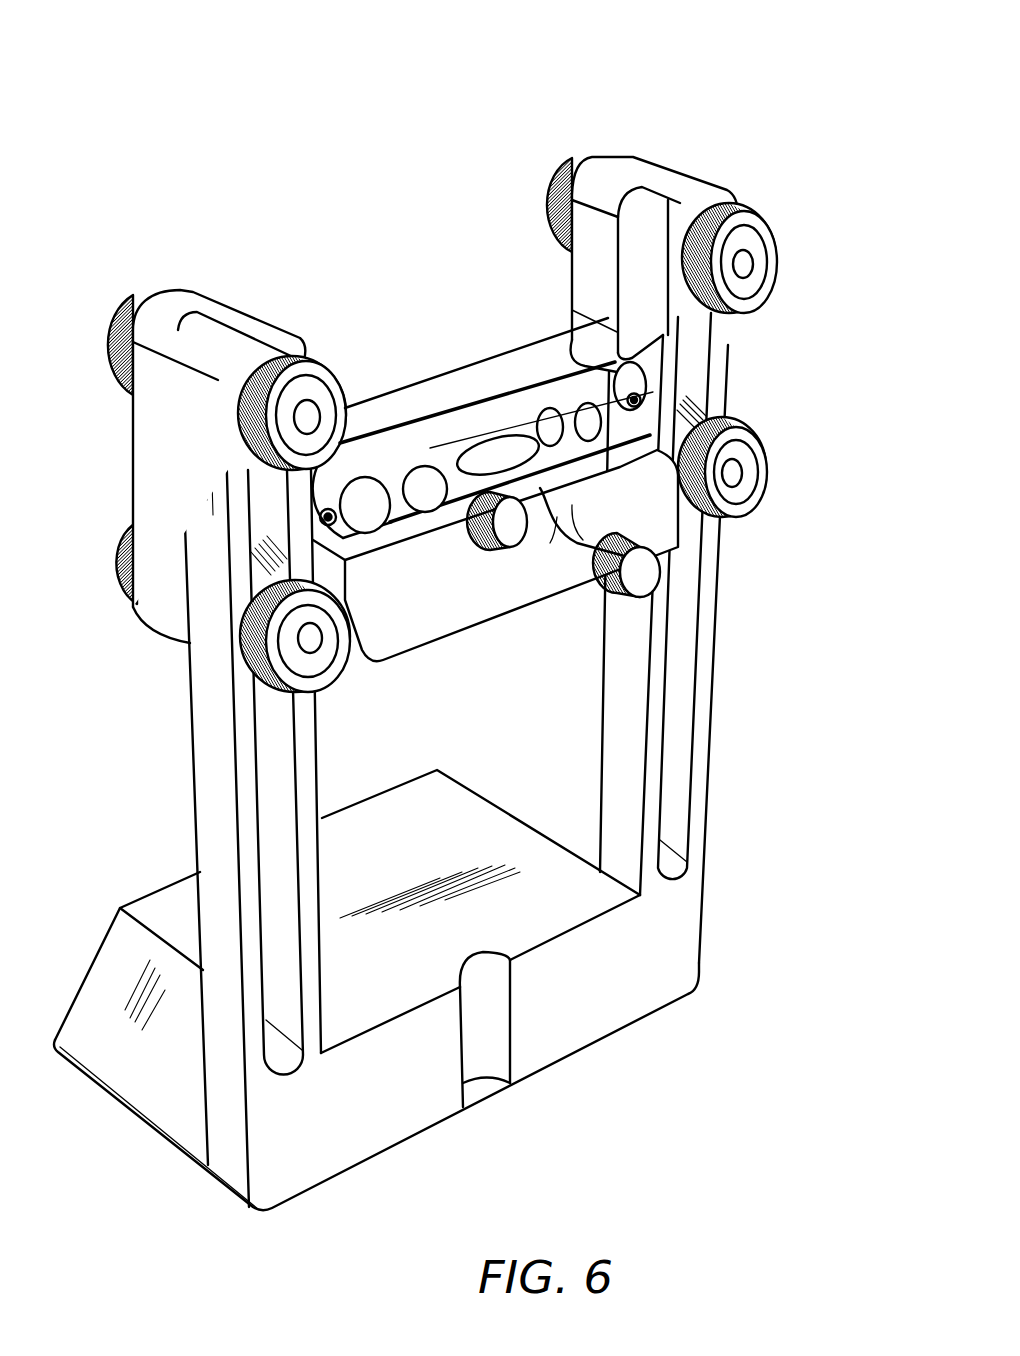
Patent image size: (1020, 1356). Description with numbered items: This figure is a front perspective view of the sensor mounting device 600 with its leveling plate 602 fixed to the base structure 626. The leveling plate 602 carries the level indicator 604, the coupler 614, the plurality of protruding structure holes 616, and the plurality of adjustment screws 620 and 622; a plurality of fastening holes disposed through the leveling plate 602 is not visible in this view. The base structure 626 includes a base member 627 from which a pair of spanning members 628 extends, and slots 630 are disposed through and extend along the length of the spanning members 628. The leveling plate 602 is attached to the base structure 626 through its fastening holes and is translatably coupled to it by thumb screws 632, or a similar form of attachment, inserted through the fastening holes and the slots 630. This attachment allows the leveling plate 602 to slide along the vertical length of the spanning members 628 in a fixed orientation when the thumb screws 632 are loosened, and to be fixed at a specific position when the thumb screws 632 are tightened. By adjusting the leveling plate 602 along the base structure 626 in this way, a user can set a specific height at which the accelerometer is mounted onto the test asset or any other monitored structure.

The sensor mounting device 600 is at (684, 108).
The leveling plate 602 is at (510, 370).
The level indicator 604 is at (482, 432).
The coupler 614 is at (653, 527).
The protruding structure holes 616 is at (567, 397).
The adjustment screw 620 is at (633, 588).
The adjustment screw 622 is at (500, 532).
The base structure 626 is at (657, 947).
The base member 627 is at (395, 1083).
The spanning members 628 is at (713, 680).
The slots 630 is at (680, 748).
The thumb screws 632 is at (147, 288).